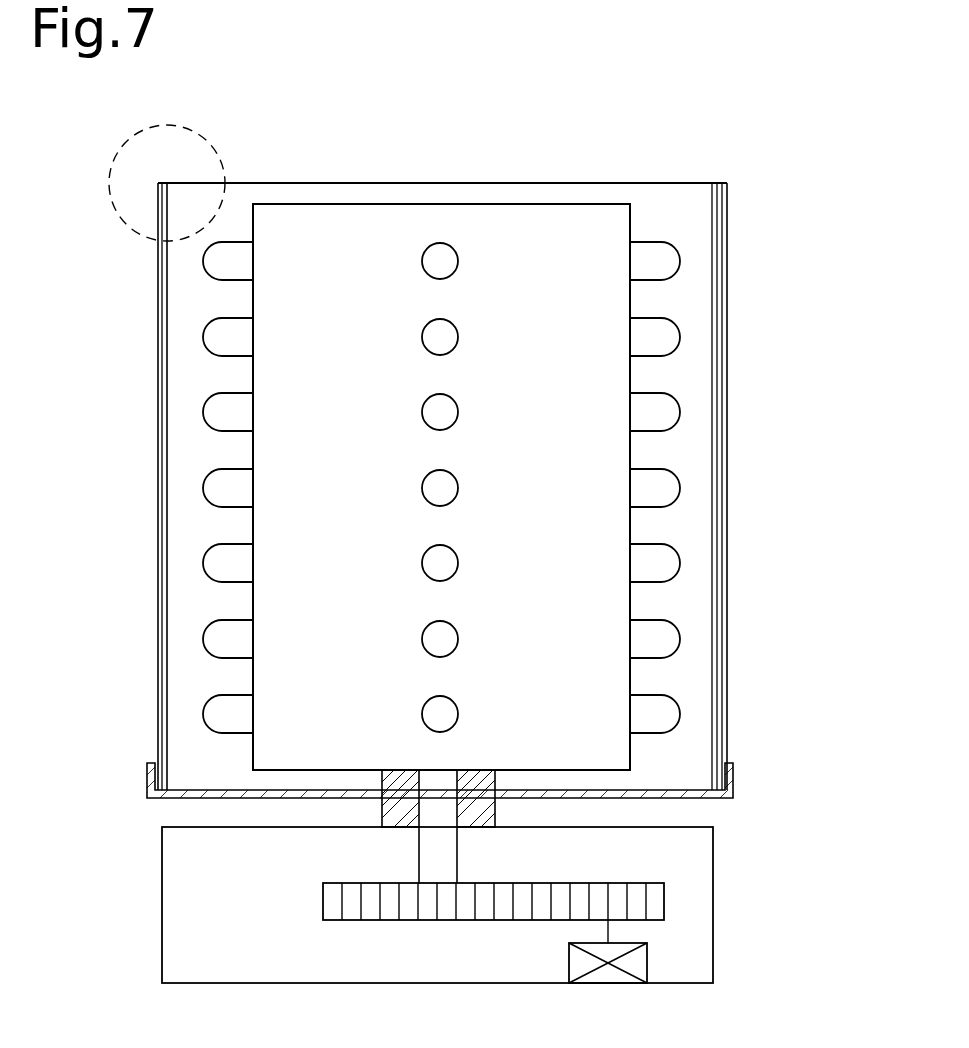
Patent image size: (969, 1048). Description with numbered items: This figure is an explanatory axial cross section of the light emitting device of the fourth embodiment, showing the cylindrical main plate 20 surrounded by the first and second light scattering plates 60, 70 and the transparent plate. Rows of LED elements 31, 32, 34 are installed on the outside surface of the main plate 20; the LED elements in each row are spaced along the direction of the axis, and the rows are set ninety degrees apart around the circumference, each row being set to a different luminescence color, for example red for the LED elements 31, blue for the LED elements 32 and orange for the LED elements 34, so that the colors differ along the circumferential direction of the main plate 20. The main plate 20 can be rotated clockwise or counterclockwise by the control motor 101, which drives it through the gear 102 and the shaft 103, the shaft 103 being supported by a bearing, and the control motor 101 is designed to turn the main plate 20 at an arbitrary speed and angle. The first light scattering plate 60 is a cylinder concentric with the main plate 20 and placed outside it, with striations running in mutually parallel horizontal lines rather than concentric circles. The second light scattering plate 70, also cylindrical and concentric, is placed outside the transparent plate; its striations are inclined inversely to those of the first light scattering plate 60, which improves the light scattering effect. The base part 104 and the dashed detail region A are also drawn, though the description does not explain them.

The main plate 20 is at (462, 203).
The LED elements 31 is at (423, 408).
The LED elements 32 is at (203, 412).
The LED elements 34 is at (680, 412).
The first light scattering plate 60 is at (167, 568).
The second light scattering plate 70 is at (158, 505).
The control motor 101 is at (647, 963).
The gear 102 is at (664, 901).
The shaft 103 is at (457, 868).
The tray 104 is at (733, 780).
The detail region A is at (193, 131).